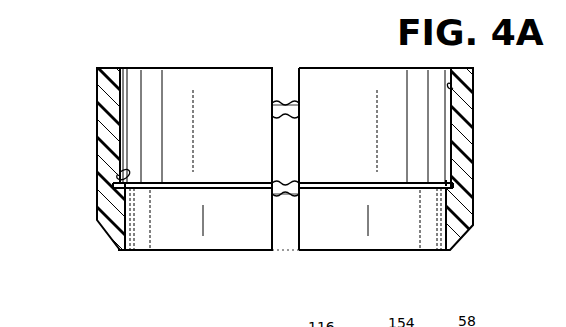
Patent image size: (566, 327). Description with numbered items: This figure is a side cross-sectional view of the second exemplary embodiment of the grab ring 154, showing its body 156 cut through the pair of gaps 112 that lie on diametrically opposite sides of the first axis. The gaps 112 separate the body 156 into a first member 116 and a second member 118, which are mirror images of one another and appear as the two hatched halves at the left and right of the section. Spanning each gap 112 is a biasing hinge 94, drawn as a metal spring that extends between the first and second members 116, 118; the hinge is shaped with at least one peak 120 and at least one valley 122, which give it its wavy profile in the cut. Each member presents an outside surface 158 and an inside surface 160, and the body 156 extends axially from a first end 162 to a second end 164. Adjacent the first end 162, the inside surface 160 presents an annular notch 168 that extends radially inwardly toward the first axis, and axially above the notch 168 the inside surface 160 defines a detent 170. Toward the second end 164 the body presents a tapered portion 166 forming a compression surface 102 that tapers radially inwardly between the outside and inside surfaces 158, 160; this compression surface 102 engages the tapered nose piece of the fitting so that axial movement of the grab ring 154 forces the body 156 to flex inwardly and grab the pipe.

The biasing hinge 94 is at (283, 100).
The compression surface 102 is at (100, 226).
The gap 112 is at (297, 234).
The first member 116 is at (97, 82).
The second member 118 is at (470, 134).
The peak 120 is at (276, 104).
The valley 122 is at (290, 113).
The grab ring 154 is at (93, 118).
The body 156 is at (472, 171).
The outside surface 158 is at (97, 152).
The inside surface 160 is at (118, 176).
The first end 162 is at (110, 67).
The second end 164 is at (121, 252).
The tapered portion 166 is at (456, 86).
The annular notch 168 is at (442, 189).
The detent 170 is at (448, 182).